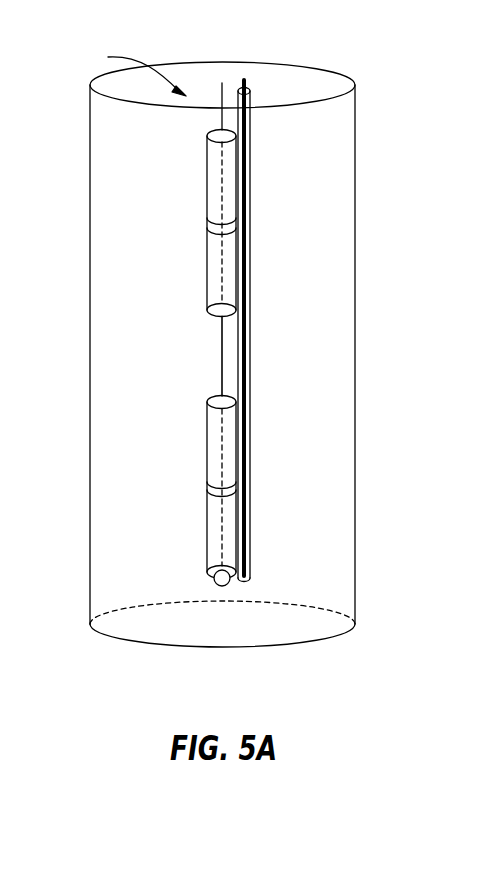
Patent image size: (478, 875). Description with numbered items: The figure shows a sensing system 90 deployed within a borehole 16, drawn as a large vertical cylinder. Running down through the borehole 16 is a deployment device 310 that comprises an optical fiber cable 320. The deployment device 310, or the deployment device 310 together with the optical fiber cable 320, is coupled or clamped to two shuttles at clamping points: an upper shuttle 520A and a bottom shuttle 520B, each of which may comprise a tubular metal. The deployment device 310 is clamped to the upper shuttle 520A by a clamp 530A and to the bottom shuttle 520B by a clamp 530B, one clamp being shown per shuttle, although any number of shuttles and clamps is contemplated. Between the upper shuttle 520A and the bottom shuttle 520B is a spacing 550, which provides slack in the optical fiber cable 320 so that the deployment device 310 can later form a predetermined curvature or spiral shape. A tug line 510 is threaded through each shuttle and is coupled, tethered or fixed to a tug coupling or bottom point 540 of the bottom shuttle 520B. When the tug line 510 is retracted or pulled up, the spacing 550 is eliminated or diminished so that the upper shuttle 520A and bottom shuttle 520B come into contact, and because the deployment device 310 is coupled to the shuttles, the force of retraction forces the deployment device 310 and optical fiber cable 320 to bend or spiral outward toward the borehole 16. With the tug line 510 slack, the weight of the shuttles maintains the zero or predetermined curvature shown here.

The borehole 16 is at (89, 355).
The sensing system 90 is at (133, 69).
The deployment device 310 is at (253, 163).
The optical fiber cable 320 is at (248, 87).
The tug line 510 is at (216, 94).
The upper shuttle 520A is at (207, 183).
The clamp 530A is at (208, 222).
The spacing 550 is at (202, 297).
The bottom shuttle 520B is at (207, 440).
The clamp 530B is at (208, 488).
The tug coupling 540 is at (213, 577).